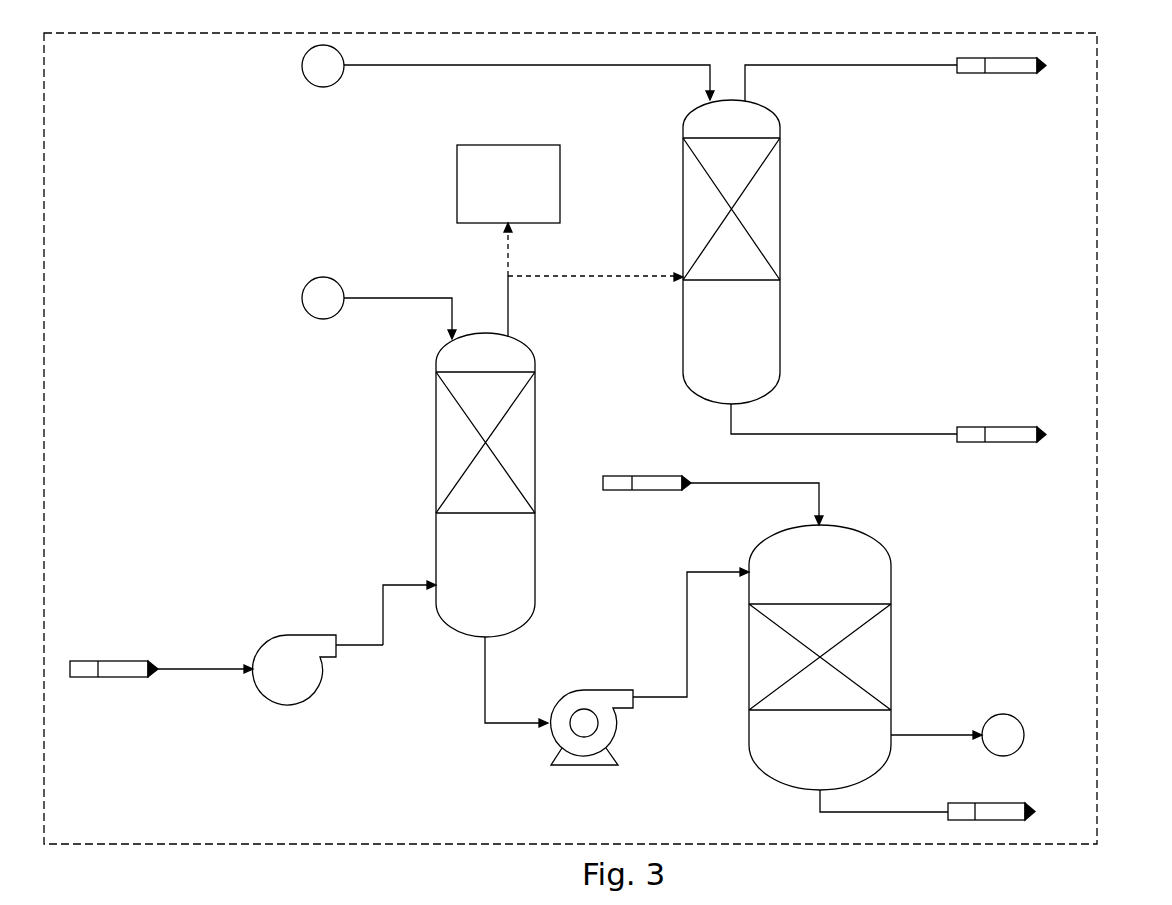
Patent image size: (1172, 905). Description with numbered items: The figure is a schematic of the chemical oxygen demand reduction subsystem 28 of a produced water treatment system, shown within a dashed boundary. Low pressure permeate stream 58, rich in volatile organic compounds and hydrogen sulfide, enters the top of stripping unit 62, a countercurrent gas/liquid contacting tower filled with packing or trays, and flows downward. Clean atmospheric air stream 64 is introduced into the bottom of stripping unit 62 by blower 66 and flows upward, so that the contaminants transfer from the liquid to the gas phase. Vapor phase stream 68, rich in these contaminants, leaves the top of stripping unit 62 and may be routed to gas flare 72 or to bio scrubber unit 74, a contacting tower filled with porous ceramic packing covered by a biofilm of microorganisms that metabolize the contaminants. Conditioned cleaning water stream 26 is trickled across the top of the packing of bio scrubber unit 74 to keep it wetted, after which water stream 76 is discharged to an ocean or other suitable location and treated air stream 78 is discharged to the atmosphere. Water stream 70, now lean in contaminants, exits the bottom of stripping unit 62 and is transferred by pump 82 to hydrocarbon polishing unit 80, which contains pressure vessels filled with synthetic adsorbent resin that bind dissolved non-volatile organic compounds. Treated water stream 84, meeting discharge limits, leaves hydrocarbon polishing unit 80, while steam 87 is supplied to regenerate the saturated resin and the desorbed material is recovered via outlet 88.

The conditioned cleaning water stream 26 is at (385, 67).
The chemical oxygen demand reduction subsystem 28 is at (1097, 213).
The low pressure permeate stream 58 is at (393, 297).
The stripping unit 62 is at (436, 533).
The clean atmospheric air stream 64 is at (125, 661).
The blower 66 is at (290, 650).
The vapor phase stream 68 is at (508, 318).
The water stream 70 is at (485, 675).
The gas flare 72 is at (560, 185).
The bio scrubber unit 74 is at (780, 310).
The water stream 76 is at (1008, 427).
The treated air stream 78 is at (1003, 73).
The hydrocarbon polishing unit 80 is at (891, 585).
The pump 82 is at (596, 700).
The treated water stream 84 is at (950, 735).
The steam 87 is at (618, 483).
The outlet 88 is at (960, 803).